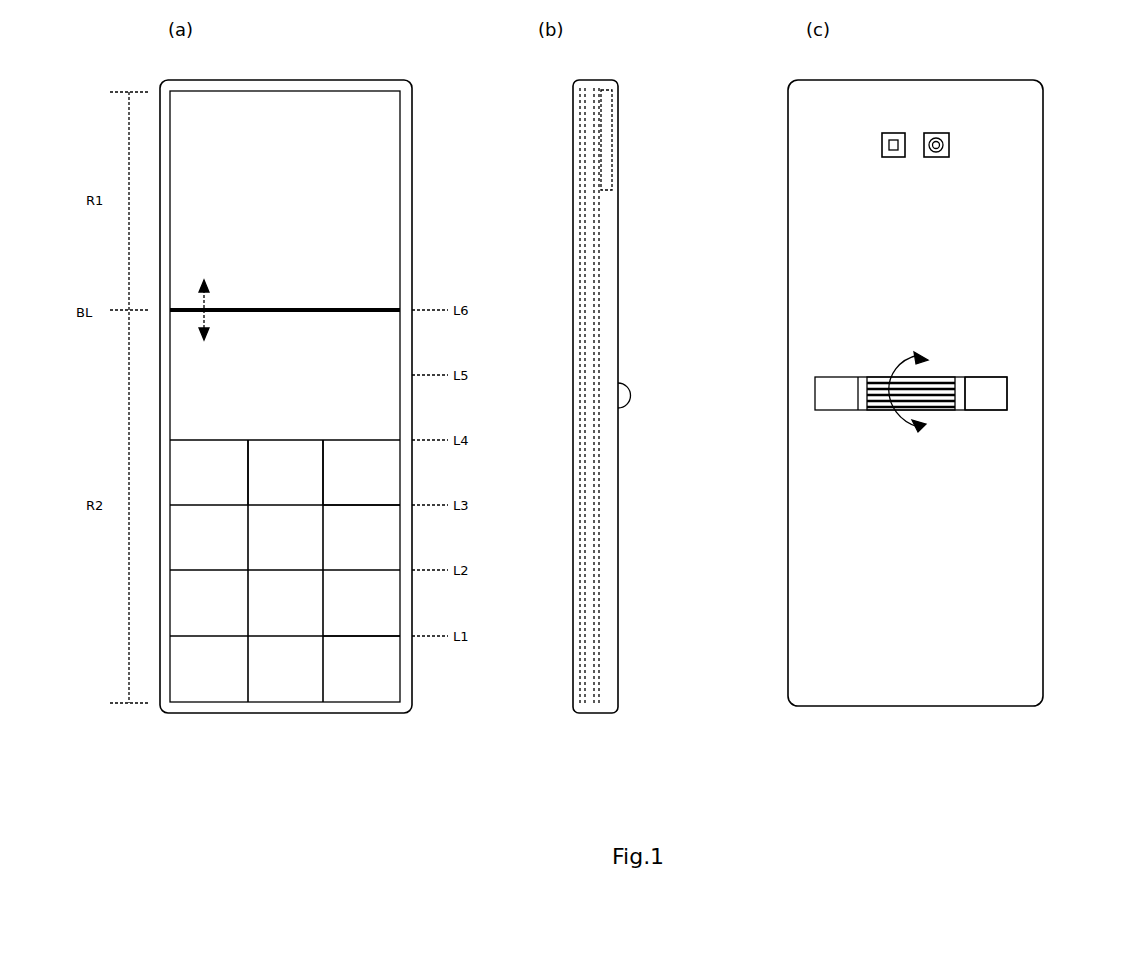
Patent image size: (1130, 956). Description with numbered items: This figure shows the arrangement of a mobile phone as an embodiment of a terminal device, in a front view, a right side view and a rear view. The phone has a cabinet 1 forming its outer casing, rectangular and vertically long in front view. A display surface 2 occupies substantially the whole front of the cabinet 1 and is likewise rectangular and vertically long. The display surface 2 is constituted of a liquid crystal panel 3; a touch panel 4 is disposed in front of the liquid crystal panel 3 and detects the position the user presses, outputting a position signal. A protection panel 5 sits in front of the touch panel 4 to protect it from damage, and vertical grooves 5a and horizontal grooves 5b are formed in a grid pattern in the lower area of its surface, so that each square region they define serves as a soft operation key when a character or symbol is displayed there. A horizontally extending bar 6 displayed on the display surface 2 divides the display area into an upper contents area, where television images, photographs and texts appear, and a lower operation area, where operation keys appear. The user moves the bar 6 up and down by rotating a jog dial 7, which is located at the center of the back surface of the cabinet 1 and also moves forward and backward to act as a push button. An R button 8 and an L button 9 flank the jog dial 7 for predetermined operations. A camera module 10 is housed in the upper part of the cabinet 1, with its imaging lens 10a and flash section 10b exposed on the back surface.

The cabinet 1 is at (413, 108).
The display surface 2 is at (377, 200).
The liquid crystal panel 3 is at (596, 225).
The touch panel 4 is at (587, 290).
The protection panel 5 is at (345, 462).
The vertical grooves 5a is at (323, 466).
The horizontal grooves 5b is at (370, 441).
The bar 6 is at (355, 306).
The jog dial 7 is at (936, 376).
The R button 8 is at (985, 392).
The L button 9 is at (625, 389).
The camera module 10 is at (612, 125).
The imaging lens 10a is at (936, 133).
The flash section 10b is at (893, 133).